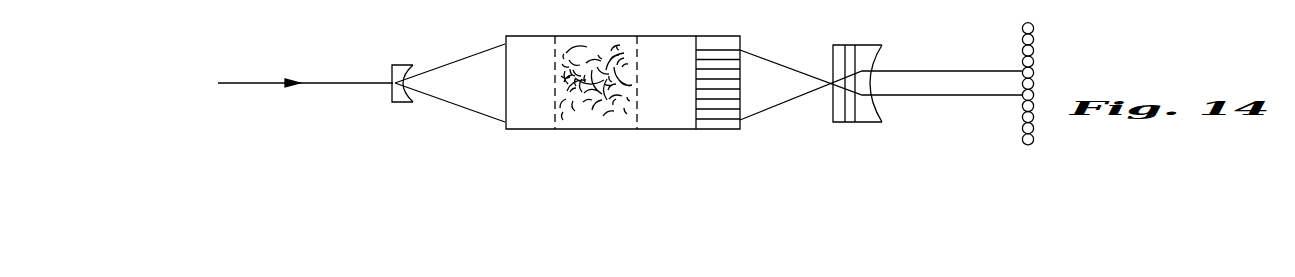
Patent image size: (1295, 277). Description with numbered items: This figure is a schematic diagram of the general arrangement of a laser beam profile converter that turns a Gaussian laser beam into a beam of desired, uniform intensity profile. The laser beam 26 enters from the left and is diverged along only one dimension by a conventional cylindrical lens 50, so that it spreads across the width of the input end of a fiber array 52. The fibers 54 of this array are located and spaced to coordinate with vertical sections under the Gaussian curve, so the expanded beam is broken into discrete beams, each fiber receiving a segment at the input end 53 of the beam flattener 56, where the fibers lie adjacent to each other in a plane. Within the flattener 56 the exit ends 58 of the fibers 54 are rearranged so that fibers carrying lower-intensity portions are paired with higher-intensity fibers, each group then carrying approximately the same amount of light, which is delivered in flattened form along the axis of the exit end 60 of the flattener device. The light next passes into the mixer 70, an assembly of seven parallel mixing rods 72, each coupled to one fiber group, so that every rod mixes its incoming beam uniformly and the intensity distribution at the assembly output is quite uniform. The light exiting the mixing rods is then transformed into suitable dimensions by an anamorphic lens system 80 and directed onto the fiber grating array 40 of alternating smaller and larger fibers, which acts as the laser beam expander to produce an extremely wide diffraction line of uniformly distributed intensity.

The laser beam 26 is at (305, 72).
The cylindrical lens 50 is at (401, 69).
The fiber array 52 is at (505, 85).
The input end 53 is at (503, 107).
The fibers 54 is at (590, 114).
The beam flattener 56 is at (535, 60).
The exit ends of the fibers 58 is at (457, 62).
The exit end of the flattener device 60 is at (665, 115).
The mixer 70 is at (714, 132).
The mixing rods 72 is at (741, 68).
The anamorphic lens system 80 is at (857, 69).
The array 40 is at (1029, 72).